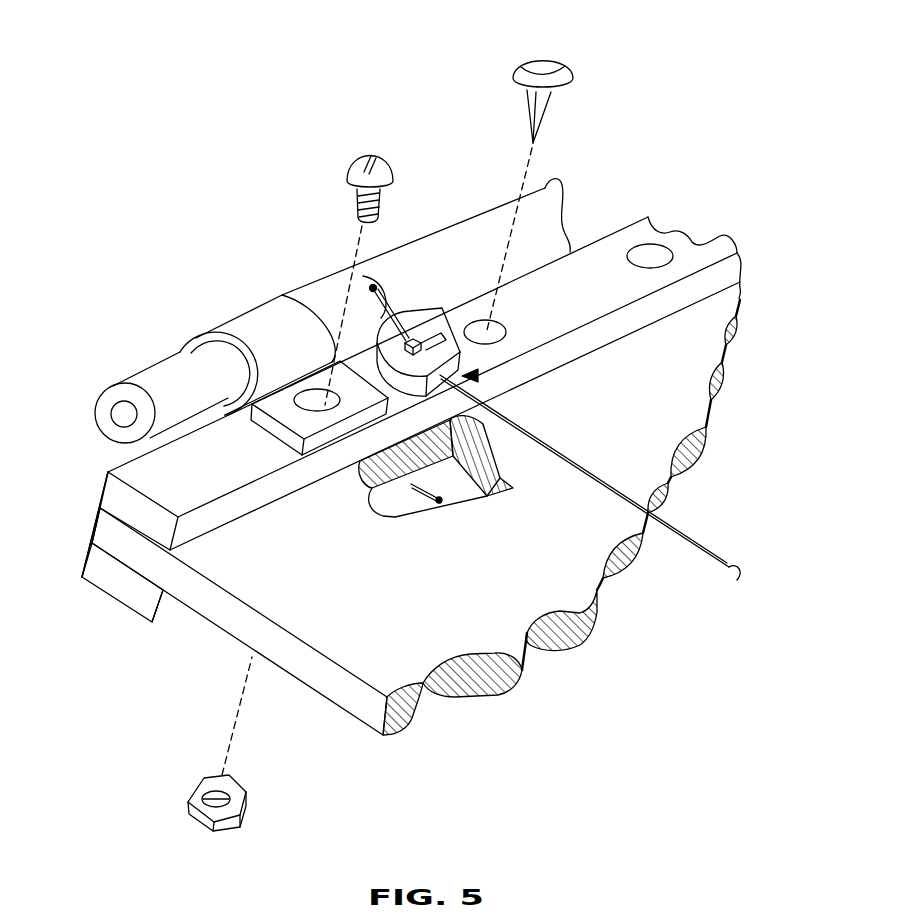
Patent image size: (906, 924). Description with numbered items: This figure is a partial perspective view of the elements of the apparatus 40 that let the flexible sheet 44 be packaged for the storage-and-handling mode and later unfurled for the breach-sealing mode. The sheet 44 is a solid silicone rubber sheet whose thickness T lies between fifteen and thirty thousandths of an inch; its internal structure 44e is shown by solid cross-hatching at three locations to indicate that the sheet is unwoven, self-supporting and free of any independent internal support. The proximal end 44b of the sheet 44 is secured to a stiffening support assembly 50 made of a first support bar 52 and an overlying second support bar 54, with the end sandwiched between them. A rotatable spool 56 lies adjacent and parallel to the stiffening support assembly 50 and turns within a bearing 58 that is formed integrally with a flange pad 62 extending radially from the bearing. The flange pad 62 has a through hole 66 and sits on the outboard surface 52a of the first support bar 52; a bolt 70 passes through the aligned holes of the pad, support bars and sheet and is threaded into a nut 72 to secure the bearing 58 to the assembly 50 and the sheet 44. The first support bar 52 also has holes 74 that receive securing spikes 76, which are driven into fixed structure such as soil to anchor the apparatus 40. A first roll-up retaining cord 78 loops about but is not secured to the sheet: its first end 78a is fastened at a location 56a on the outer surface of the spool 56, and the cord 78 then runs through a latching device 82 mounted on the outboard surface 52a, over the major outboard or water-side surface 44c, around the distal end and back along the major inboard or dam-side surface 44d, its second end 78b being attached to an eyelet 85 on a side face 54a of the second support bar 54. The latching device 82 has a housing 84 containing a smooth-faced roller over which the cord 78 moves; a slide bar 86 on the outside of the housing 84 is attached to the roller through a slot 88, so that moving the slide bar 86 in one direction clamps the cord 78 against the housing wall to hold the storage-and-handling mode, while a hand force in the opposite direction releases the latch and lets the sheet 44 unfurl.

The apparatus 40 is at (225, 162).
The flexible sheet 44 is at (380, 730).
The proximal end 44b is at (93, 522).
The major outboard surface 44c is at (440, 697).
The major inboard surface 44d is at (300, 688).
The internal structure 44e is at (378, 508).
The stiffening support assembly 50 is at (80, 566).
The first support bar 52 is at (107, 490).
The outboard surface 52a is at (735, 250).
The second support bar 54 is at (98, 585).
The side face 54a is at (167, 605).
The rotatable spool 56 is at (138, 366).
The location 56a is at (368, 274).
The bearing 58 is at (258, 318).
The flange pad 62 is at (300, 462).
The through hole 66 is at (334, 414).
The bolt 70 is at (352, 170).
The nut 72 is at (205, 818).
The holes 74 is at (508, 330).
The securing spike 76 is at (552, 58).
The first roll-up retaining cord 78 is at (712, 548).
The first end 78a is at (368, 286).
The second end 78b is at (443, 505).
The latching device 82 is at (462, 368).
The housing 84 is at (418, 488).
The eyelet 85 is at (466, 356).
The slide bar 86 is at (410, 320).
The slot 88 is at (420, 338).
The thickness T is at (243, 556).